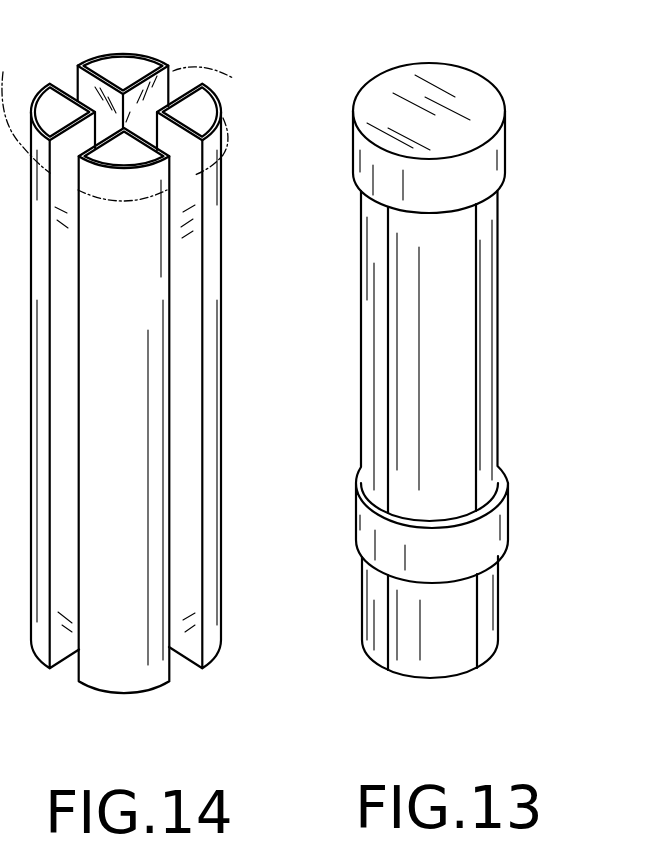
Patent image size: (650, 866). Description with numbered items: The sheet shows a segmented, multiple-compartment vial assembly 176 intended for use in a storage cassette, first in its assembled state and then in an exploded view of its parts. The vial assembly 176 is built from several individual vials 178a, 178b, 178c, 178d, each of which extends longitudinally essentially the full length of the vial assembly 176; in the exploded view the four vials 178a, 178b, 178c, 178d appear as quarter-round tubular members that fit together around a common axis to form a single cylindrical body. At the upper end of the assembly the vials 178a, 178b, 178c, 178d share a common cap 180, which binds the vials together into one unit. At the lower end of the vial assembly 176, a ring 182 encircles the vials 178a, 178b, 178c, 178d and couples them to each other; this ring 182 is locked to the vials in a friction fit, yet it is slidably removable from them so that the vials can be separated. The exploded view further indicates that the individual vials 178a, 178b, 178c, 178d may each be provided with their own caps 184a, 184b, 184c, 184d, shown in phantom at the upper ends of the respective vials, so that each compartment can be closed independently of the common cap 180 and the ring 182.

In FIG. 13, the segmented vial assembly 176 is at (423, 411).
In FIG. 14, the individual vial 178a is at (157, 678).
In FIG. 13, the individual vial 178a is at (457, 447).
In FIG. 14, the individual vial 178b is at (43, 650).
In FIG. 13, the individual vial 178b is at (368, 437).
In FIG. 14, the individual vial 178c is at (223, 603).
In FIG. 13, the individual vial 178c is at (498, 338).
In FIG. 14, the individual vial 178d is at (140, 55).
In FIG. 13, the common cap 180 is at (447, 75).
In FIG. 13, the ring 182 is at (488, 530).
In FIG. 14, the cap 184a is at (123, 200).
In FIG. 14, the cap 184b is at (3, 72).
In FIG. 14, the cap 184c is at (196, 175).
In FIG. 14, the cap 184d is at (233, 78).